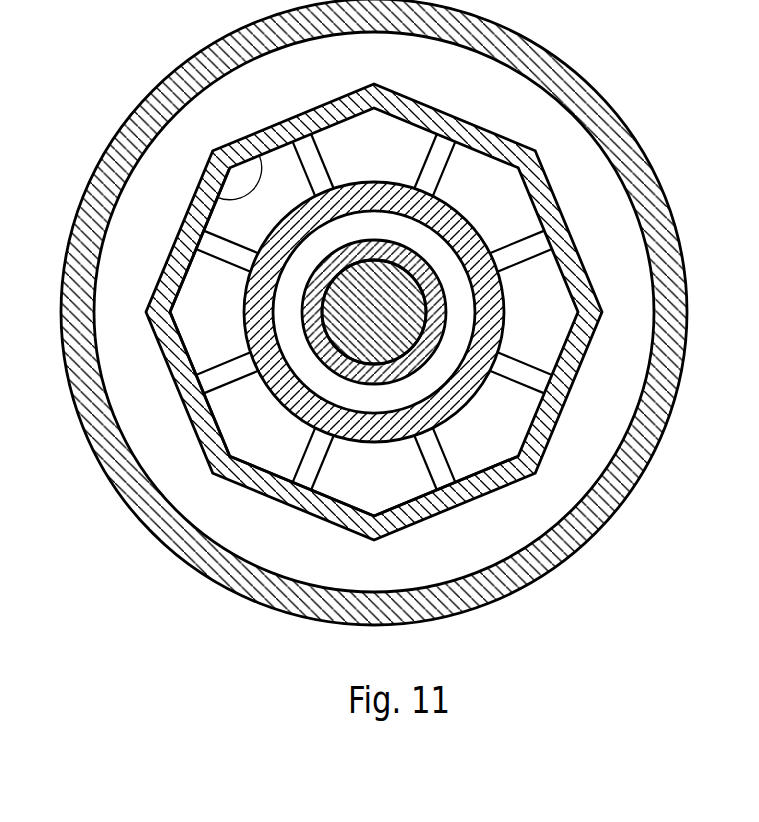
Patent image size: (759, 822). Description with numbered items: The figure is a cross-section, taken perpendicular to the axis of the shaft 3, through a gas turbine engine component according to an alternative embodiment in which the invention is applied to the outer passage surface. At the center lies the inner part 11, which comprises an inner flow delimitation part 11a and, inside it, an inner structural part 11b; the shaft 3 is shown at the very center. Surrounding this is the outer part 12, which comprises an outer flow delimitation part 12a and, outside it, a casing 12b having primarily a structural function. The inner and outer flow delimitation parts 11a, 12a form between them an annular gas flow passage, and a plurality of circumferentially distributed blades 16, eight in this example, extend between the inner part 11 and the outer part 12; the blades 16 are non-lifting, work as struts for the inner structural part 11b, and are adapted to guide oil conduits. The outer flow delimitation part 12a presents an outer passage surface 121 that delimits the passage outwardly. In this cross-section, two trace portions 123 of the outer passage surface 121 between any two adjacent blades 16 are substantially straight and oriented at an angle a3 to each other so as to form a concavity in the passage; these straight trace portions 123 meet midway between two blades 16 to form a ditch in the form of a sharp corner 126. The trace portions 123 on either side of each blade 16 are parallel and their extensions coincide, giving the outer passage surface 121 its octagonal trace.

The outer part 12 is at (396, 312).
The outer flow delimitation part 12a is at (447, 112).
The casing 12b is at (140, 107).
The trace portions 123 is at (428, 133).
The outer passage surface 121 is at (263, 468).
The sharp corner 126 is at (172, 312).
The blades 16 is at (523, 357).
The angle a3 is at (252, 193).
The inner part 11 is at (383, 314).
The inner flow delimitation part 11a is at (443, 203).
The inner structural part 11b is at (423, 363).
The shaft 3 is at (334, 312).